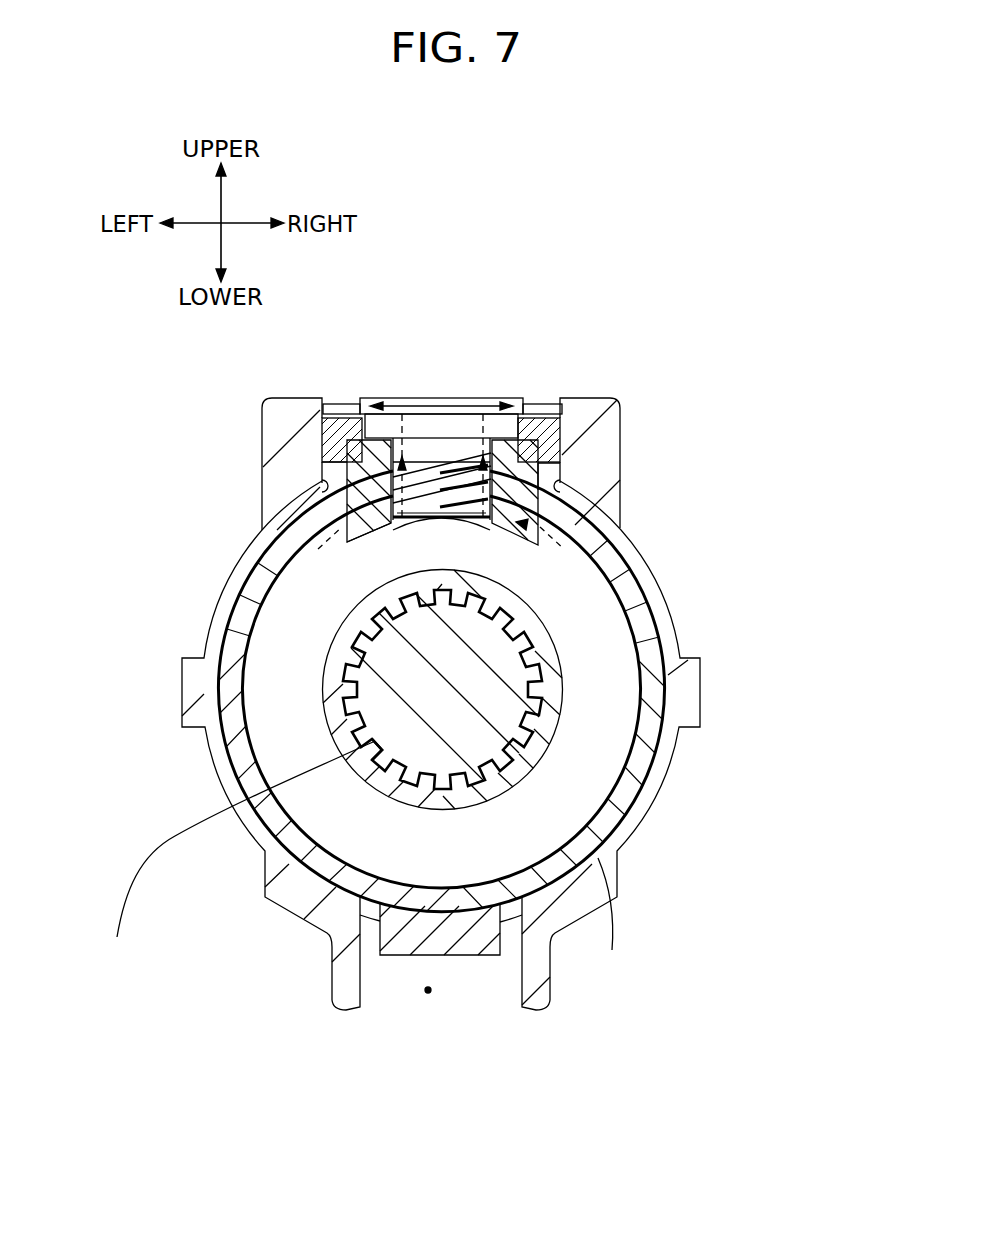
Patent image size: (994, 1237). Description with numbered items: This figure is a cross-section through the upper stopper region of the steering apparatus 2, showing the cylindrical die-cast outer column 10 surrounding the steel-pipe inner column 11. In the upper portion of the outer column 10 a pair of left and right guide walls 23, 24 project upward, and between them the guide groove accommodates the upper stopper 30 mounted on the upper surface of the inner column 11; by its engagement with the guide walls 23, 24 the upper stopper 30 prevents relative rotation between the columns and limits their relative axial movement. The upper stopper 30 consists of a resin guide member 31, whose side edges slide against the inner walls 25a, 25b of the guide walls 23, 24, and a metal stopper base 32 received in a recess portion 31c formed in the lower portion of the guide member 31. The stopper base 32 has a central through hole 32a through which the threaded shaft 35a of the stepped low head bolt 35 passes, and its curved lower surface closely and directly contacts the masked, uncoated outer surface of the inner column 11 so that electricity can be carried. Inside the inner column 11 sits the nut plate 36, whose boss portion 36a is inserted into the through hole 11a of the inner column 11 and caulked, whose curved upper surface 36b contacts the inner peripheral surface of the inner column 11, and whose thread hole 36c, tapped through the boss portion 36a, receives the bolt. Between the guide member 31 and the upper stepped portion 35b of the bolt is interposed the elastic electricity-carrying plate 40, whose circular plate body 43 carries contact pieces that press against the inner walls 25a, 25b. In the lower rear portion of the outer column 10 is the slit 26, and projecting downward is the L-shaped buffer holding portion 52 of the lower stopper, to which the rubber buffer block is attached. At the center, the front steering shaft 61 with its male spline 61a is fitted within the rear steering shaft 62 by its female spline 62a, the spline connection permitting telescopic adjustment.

The steering apparatus 2 is at (693, 311).
The outer column 10 is at (672, 597).
The inner column 11 is at (227, 611).
The through hole 11a is at (508, 530).
The guide wall 23 is at (275, 428).
The guide wall 24 is at (612, 426).
The inner wall 25a is at (333, 503).
The inner wall 25b is at (565, 466).
The slit 26 is at (428, 993).
The upper stopper 30 is at (437, 366).
The guide member 31 is at (319, 452).
The recess portion 31c is at (330, 470).
The stopper base 32 is at (562, 440).
The through hole 32a is at (478, 423).
The stepped low head bolt 35 is at (455, 394).
The threaded shaft 35a is at (450, 520).
The upper stepped portion 35b is at (412, 396).
The nut plate 36 is at (355, 544).
The boss portion 36a is at (545, 480).
The upper surface 36b is at (369, 517).
The thread hole 36c is at (401, 520).
The electricity-carrying plate 40 is at (348, 403).
The circular plate body 43 is at (548, 416).
The buffer holding portion 52 is at (455, 936).
The front steering shaft 61 is at (478, 678).
The male spline 61a is at (345, 680).
The rear steering shaft 62 is at (548, 728).
The female spline 62a is at (375, 742).